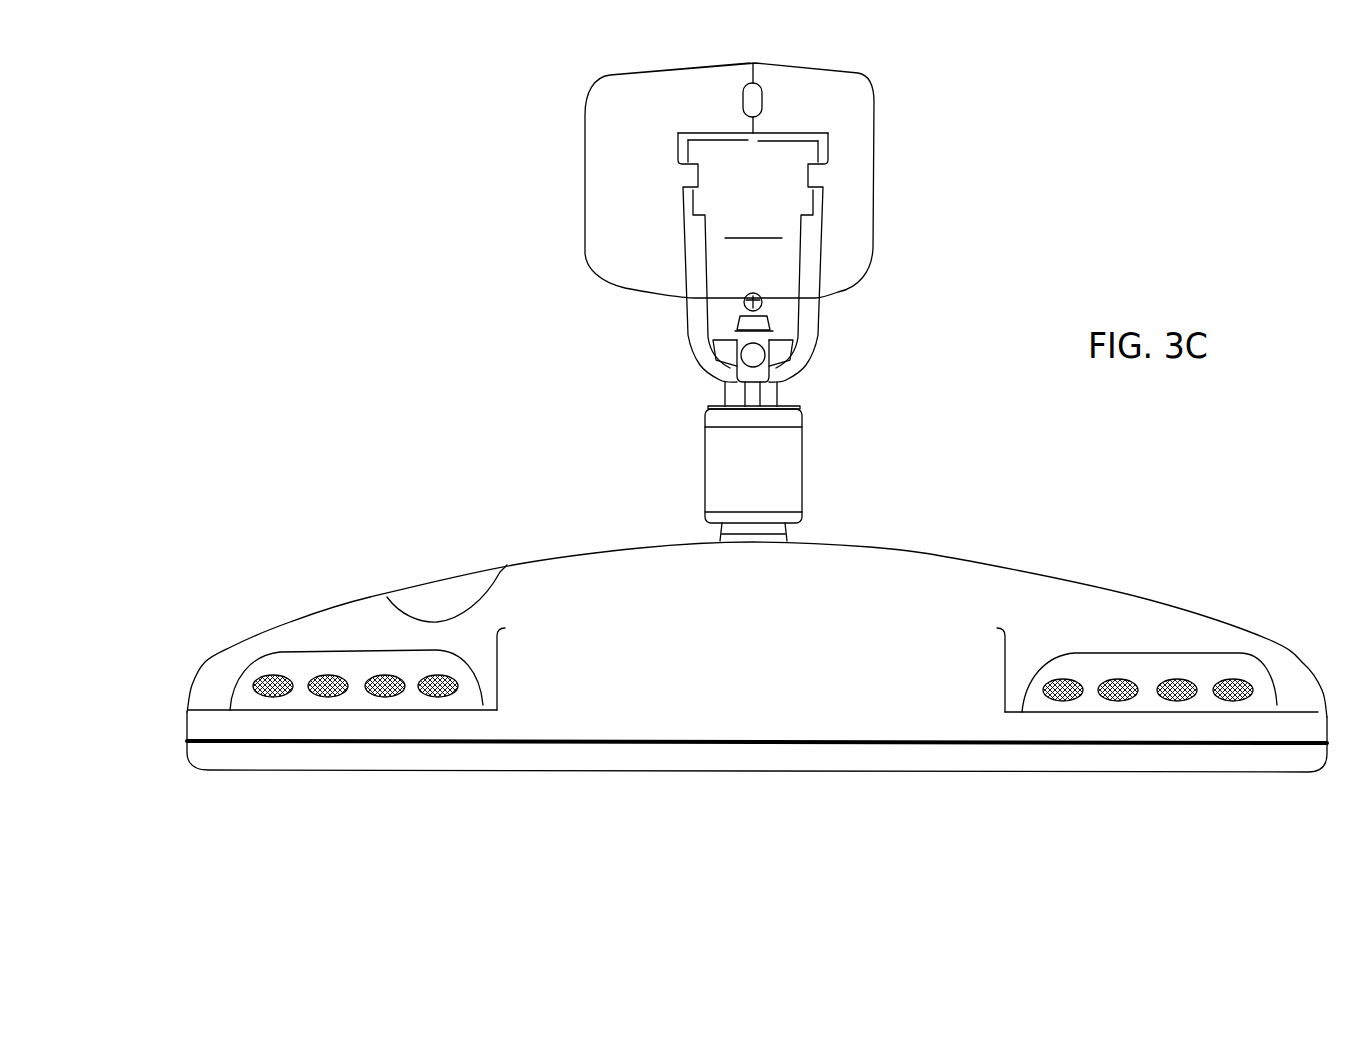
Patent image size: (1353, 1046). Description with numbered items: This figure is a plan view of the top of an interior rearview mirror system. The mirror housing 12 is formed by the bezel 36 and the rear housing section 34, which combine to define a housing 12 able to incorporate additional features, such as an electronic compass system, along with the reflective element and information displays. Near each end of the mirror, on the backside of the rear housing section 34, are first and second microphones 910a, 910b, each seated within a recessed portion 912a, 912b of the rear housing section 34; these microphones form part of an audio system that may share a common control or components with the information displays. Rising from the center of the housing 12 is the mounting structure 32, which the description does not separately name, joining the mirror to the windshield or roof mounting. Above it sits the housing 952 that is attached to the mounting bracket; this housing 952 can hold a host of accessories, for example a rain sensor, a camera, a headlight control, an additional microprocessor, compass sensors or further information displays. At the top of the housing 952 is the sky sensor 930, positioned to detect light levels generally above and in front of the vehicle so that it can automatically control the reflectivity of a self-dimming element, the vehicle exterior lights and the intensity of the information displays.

The housing 12 is at (617, 538).
The mounting arm 32 is at (753, 337).
The rear housing section 34 is at (872, 546).
The bezel 36 is at (790, 758).
The first microphone 910a is at (255, 663).
The second microphone 910b is at (1253, 673).
The recessed portion 912a is at (488, 678).
The recessed portion 912b is at (1025, 660).
The sky sensor 930 is at (752, 82).
The housing 952 is at (833, 75).